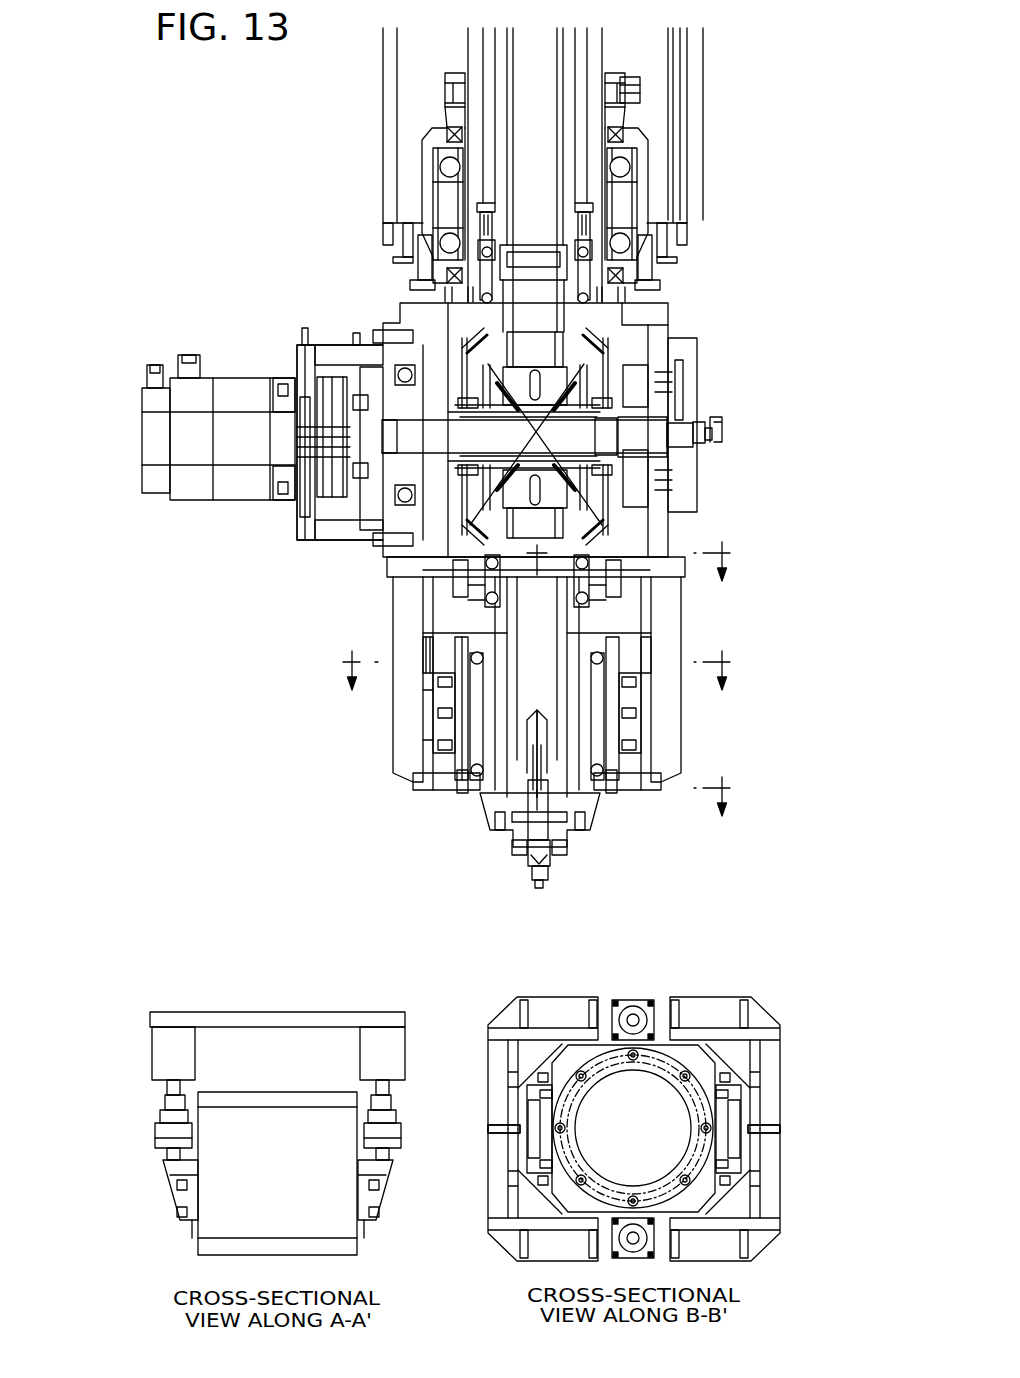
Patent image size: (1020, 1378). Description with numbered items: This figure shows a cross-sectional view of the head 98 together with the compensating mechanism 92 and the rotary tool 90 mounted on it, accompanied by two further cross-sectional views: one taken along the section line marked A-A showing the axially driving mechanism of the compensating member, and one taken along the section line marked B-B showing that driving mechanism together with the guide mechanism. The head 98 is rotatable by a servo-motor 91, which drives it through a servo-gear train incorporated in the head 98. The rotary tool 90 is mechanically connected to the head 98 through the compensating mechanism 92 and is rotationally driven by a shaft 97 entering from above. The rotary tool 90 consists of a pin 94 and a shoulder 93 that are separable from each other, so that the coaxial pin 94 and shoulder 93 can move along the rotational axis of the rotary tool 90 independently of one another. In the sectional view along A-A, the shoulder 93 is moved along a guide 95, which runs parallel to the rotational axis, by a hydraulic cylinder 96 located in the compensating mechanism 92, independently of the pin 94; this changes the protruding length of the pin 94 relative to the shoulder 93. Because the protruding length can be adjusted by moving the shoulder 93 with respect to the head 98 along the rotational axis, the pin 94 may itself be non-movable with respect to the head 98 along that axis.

The rotary tool 90 is at (683, 889).
The servo-motor 91 is at (155, 490).
The compensating mechanism 92 is at (750, 555).
The shoulder 93 is at (528, 866).
The pin 94 is at (545, 886).
The guide 95 is at (430, 648).
The hydraulic cylinder 96 is at (158, 1052).
The shaft 97 is at (542, 63).
The head 98 is at (750, 315).